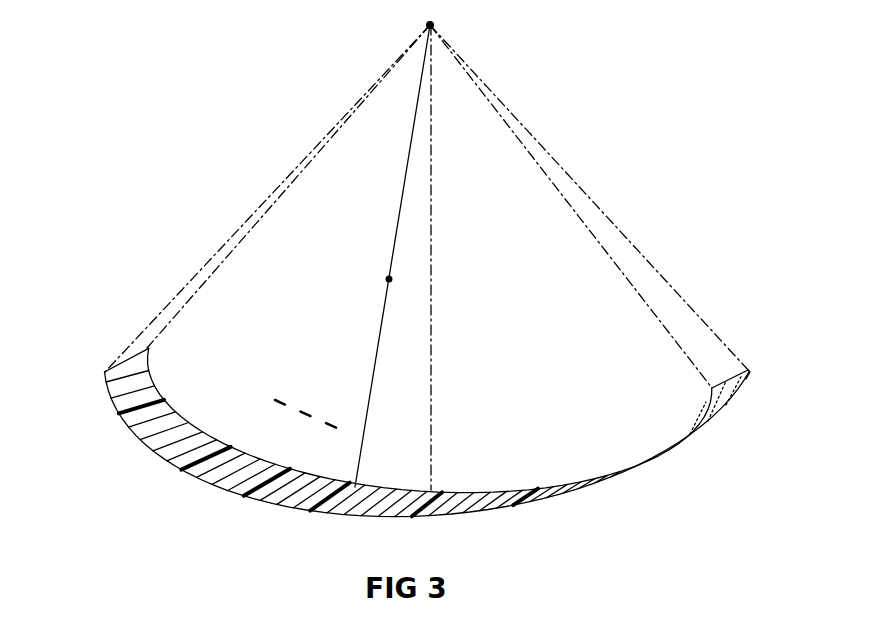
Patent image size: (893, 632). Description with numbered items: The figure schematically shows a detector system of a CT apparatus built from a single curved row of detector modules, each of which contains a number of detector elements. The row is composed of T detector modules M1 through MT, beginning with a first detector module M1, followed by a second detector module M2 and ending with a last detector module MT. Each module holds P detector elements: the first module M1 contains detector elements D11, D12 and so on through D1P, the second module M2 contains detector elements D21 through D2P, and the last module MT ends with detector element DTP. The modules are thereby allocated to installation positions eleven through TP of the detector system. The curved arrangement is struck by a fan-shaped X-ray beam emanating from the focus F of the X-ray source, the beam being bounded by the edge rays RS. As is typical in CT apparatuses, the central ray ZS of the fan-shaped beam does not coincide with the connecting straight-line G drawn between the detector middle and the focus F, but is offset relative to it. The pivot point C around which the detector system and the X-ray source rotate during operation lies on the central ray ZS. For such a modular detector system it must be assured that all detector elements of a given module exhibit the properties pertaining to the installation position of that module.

The focus F is at (433, 23).
The edge rays RS is at (167, 322).
The connecting straight-line G is at (432, 358).
The central ray ZS is at (374, 372).
The pivot point C is at (388, 279).
The detector module M1 is at (152, 378).
The detector module M2 is at (198, 430).
The detector module MT is at (740, 398).
The detector element D11 is at (103, 378).
The detector element D12 is at (107, 388).
The detector element D1P is at (123, 421).
The detector element D21 is at (130, 428).
The detector element D2P is at (177, 465).
The detector element DTP is at (741, 375).